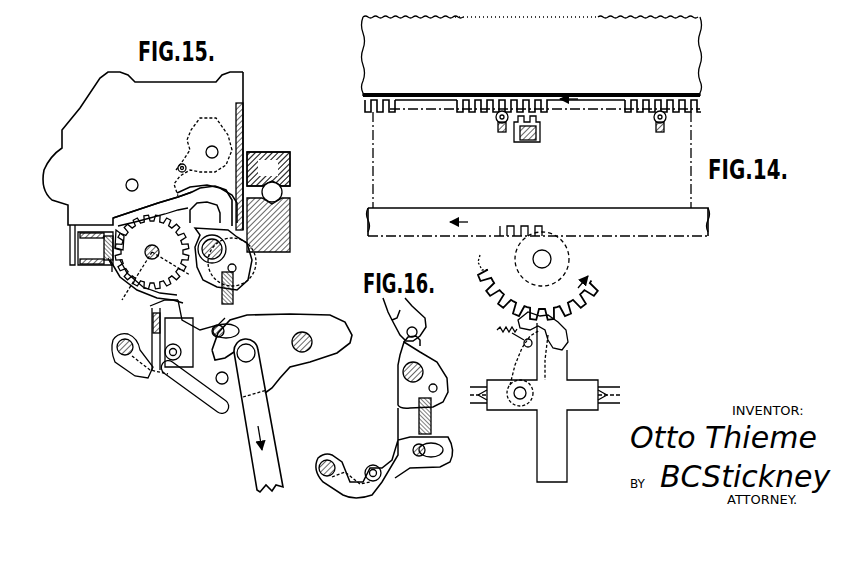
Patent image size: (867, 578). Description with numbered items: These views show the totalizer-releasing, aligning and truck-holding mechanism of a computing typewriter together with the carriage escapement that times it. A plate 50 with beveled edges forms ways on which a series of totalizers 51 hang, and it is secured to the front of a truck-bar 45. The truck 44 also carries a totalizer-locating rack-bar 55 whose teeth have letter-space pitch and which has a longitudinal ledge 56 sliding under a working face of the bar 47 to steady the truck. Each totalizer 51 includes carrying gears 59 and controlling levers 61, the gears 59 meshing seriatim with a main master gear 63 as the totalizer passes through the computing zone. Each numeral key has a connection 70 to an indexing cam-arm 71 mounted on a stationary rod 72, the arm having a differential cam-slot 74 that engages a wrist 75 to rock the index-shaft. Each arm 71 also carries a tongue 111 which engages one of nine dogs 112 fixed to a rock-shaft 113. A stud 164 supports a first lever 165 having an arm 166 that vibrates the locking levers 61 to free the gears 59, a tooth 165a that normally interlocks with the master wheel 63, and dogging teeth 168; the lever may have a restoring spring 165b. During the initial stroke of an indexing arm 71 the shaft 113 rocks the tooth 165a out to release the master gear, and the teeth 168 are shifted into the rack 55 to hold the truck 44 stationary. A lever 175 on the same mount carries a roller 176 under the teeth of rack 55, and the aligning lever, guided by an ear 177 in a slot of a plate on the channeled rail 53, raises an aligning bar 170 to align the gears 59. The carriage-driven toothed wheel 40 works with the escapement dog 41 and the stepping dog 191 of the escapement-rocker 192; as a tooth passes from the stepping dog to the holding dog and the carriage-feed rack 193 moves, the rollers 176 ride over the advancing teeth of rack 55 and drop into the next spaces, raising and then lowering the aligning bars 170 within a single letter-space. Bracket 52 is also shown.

In FIG. 14, the carriage-driven toothed wheel 40 is at (598, 296).
In FIG. 14, the escapement dog 41 is at (568, 326).
In FIG. 15, the truck 44 is at (249, 150).
In FIG. 15, the truck-bar 45 is at (290, 167).
In FIG. 15, the bar 47 is at (290, 222).
In FIG. 14, the plate 50 is at (532, 56).
In FIG. 15, the plate 50 is at (243, 112).
In FIG. 15, the totalizer 51 is at (143, 151).
In FIG. 15, the bracket 52 is at (80, 247).
In FIG. 15, the channeled rail 53 is at (82, 264).
In FIG. 14, the totalizer-locating rack-bar 55 is at (425, 104).
In FIG. 15, the totalizer-locating rack-bar 55 is at (265, 168).
In FIG. 15, the longitudinal ledge 56 is at (270, 205).
In FIG. 15, the carrying gear 59 is at (133, 209).
In FIG. 15, the controlling lever 61 is at (192, 140).
In FIG. 16, the controlling lever 61 is at (395, 320).
In FIG. 15, the main master gear 63 is at (152, 257).
In FIG. 15, the connection 70 is at (254, 455).
In FIG. 15, the indexing cam-arm 71 is at (258, 353).
In FIG. 15, the stationary rod 72 is at (305, 352).
In FIG. 15, the cam-slot 74 is at (232, 400).
In FIG. 15, the wrist 75 is at (200, 396).
In FIG. 15, the cam shoe or tongue 111 is at (171, 339).
In FIG. 15, the dog 112 is at (132, 362).
In FIG. 15, the rock-shaft 113 is at (112, 346).
In FIG. 16, the rock-shaft 113 is at (336, 460).
In FIG. 15, the stud 164 is at (214, 259).
In FIG. 16, the stud 164 is at (424, 368).
In FIG. 15, the first lever 165 is at (130, 300).
In FIG. 16, the first lever 165 is at (398, 420).
In FIG. 15, the tooth 165a is at (150, 308).
In FIG. 15, the restoring spring 165b is at (234, 292).
In FIG. 16, the restoring spring 165b is at (431, 420).
In FIG. 15, the arm 166 is at (197, 225).
In FIG. 16, the arm 166 is at (421, 345).
In FIG. 14, the dogging teeth 168 is at (540, 128).
In FIG. 15, the aligning bar 170 is at (115, 230).
In FIG. 14, the lever 175 is at (500, 132).
In FIG. 14, the roller 176 is at (496, 120).
In FIG. 15, the roller 176 is at (250, 248).
In FIG. 15, the ear 177 is at (118, 268).
In FIG. 14, the stepping dog 191 is at (520, 368).
In FIG. 14, the escapement-rocker 192 is at (545, 402).
In FIG. 14, the carriage-feed rack 193 is at (538, 222).